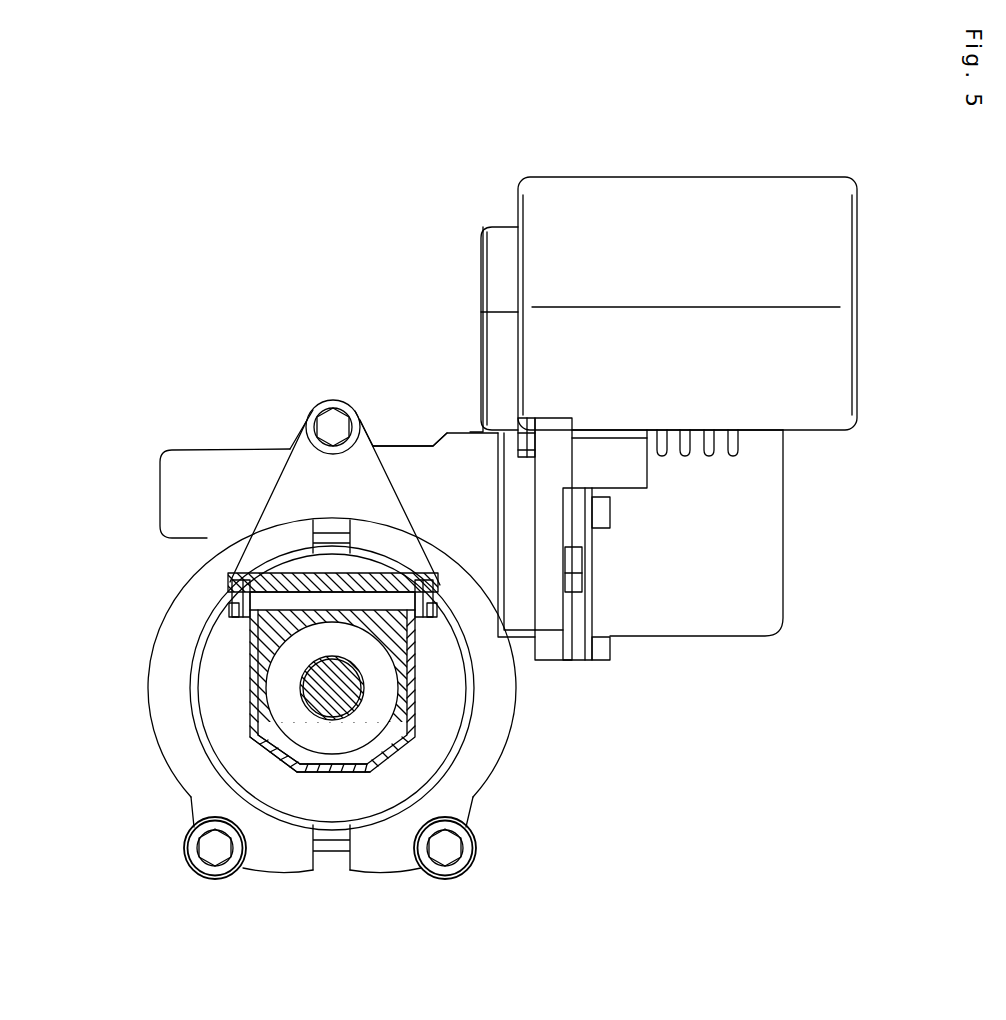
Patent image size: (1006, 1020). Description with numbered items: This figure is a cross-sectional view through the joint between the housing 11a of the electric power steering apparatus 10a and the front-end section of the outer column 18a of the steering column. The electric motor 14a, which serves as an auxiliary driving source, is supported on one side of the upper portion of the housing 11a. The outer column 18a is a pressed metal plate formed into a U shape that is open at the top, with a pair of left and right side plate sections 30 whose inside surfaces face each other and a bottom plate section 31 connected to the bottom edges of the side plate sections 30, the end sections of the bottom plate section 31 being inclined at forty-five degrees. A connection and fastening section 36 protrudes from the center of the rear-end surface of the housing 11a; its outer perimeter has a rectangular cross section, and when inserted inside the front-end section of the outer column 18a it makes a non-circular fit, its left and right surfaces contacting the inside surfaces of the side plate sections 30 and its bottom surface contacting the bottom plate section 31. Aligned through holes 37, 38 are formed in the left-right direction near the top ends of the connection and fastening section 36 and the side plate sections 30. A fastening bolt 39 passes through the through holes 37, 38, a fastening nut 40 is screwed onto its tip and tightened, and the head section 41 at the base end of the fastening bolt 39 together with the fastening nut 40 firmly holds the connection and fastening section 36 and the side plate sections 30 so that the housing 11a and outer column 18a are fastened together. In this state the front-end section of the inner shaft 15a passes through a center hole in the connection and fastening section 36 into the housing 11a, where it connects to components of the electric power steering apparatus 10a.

The electric power steering apparatus 10a is at (205, 448).
The housing 11a is at (181, 760).
The electric motor 14a is at (745, 492).
The inner shaft 15a is at (345, 692).
The outer column 18a is at (295, 770).
The side plate sections 30 is at (245, 677).
The bottom plate section 31 is at (332, 773).
The connection and fastening section 36 is at (247, 627).
The through hole 37 is at (268, 577).
The through hole 38 is at (233, 601).
The fastening bolt 39 is at (332, 600).
The fastening nut 40 is at (432, 577).
The head section 41 is at (227, 589).